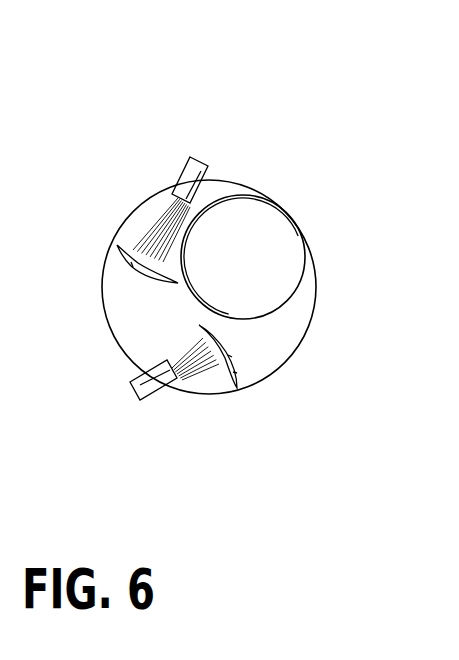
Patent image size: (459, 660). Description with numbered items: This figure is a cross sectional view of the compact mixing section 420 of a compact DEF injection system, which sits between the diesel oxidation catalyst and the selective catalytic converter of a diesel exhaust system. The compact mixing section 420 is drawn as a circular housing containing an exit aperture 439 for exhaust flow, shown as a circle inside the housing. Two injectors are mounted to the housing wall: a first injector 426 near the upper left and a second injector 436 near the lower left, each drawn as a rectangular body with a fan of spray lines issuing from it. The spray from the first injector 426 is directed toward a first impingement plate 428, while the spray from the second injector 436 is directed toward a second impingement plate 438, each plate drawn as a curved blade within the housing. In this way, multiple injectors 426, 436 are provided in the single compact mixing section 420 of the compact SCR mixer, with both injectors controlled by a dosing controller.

The compact mixing section 420 is at (243, 152).
The first injector 426 is at (183, 172).
The first impingement plate 428 is at (120, 267).
The second injector 436 is at (152, 400).
The second impingement plate 438 is at (237, 362).
The exit aperture 439 is at (270, 278).